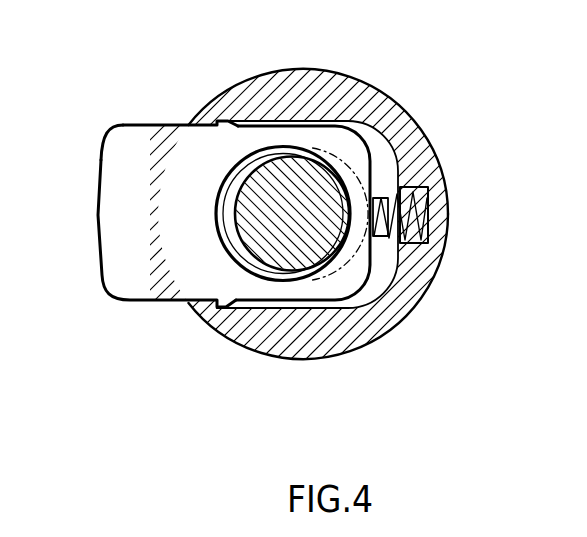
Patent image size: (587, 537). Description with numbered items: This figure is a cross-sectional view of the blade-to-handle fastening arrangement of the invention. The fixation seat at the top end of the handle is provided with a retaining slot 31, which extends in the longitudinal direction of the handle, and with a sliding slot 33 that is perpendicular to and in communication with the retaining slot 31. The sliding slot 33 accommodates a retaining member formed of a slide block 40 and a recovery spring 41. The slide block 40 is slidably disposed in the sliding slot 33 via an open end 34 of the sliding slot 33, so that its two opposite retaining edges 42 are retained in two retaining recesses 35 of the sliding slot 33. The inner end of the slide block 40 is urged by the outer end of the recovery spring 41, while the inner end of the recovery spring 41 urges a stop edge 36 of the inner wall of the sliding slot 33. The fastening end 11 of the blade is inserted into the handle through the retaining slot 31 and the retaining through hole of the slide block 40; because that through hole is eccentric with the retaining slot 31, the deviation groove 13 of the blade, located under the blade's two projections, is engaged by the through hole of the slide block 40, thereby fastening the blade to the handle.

The fastening end 11 is at (299, 262).
The deviation groove 13 is at (223, 228).
The retaining slot 31 is at (258, 148).
The sliding slot 33 is at (368, 114).
The open end 34 is at (198, 124).
The retaining recesses 35 is at (197, 123).
The stop edge 36 is at (426, 183).
The slide block 40 is at (132, 213).
The recovery spring 41 is at (428, 241).
The retaining edges 42 is at (229, 310).